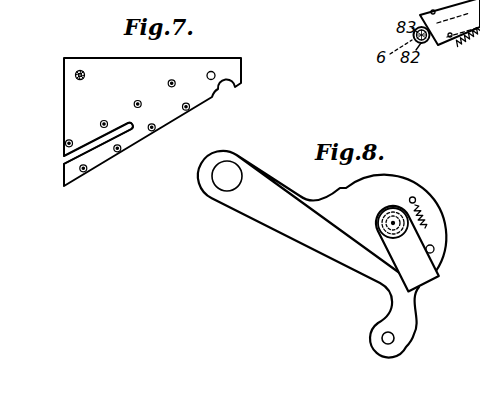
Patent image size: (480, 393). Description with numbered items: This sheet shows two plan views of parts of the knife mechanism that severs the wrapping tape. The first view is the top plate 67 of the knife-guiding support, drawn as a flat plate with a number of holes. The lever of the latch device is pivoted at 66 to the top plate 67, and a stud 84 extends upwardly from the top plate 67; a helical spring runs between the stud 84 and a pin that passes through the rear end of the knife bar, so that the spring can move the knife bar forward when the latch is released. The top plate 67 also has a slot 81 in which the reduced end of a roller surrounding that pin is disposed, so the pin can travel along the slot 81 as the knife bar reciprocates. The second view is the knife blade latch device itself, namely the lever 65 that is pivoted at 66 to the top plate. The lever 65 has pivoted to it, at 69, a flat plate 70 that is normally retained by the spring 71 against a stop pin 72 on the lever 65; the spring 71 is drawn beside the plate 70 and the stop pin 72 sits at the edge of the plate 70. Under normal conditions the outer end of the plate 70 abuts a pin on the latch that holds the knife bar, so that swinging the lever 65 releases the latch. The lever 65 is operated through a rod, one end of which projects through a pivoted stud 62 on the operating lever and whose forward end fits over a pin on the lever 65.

In FIG. 7, the top plate 67 is at (131, 63).
In FIG. 7, the pivot 66 is at (76, 75).
In FIG. 8, the pivot 66 is at (231, 167).
In FIG. 7, the stud 84 is at (214, 72).
In FIG. 7, the slot 81 is at (63, 165).
In FIG. 8, the lever 65 is at (297, 240).
In FIG. 8, the pivoted stud 62 is at (380, 336).
In FIG. 8, the pivot 69 is at (397, 215).
In FIG. 8, the flat plate 70 is at (427, 283).
In FIG. 8, the spring 71 is at (427, 210).
In FIG. 8, the stop pin 72 is at (435, 246).